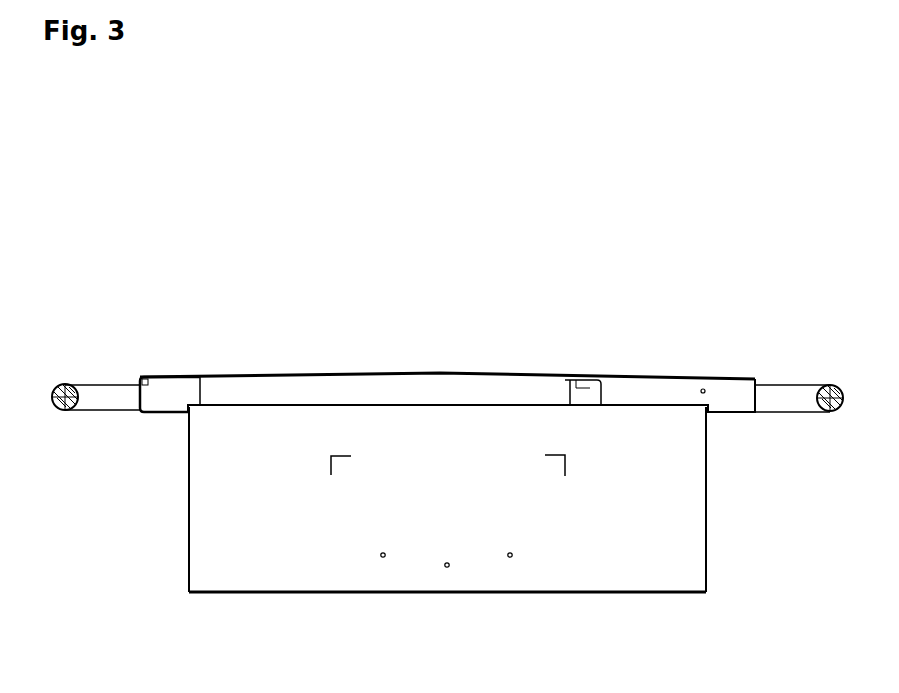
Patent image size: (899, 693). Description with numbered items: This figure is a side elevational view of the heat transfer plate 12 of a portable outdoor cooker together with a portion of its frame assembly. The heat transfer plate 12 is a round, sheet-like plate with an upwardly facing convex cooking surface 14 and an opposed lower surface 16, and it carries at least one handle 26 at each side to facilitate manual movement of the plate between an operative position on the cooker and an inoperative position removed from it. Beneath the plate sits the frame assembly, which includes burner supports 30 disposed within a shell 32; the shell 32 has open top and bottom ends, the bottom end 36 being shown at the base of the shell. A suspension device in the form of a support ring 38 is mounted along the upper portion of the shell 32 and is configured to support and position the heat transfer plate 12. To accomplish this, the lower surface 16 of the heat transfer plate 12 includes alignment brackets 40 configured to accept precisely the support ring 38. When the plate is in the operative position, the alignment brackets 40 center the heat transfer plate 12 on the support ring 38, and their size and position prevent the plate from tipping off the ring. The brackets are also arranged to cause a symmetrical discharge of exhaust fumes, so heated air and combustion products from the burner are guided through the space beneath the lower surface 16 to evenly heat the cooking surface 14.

The heat transfer plate 12 is at (656, 375).
The cooking surface 14 is at (368, 374).
The lower surface 16 is at (443, 374).
The handle 26 is at (58, 385).
The burner supports 30 is at (330, 470).
The shell 32 is at (213, 568).
The bottom end 36 is at (661, 593).
The support ring 38 is at (183, 413).
The alignment brackets 40 is at (160, 400).